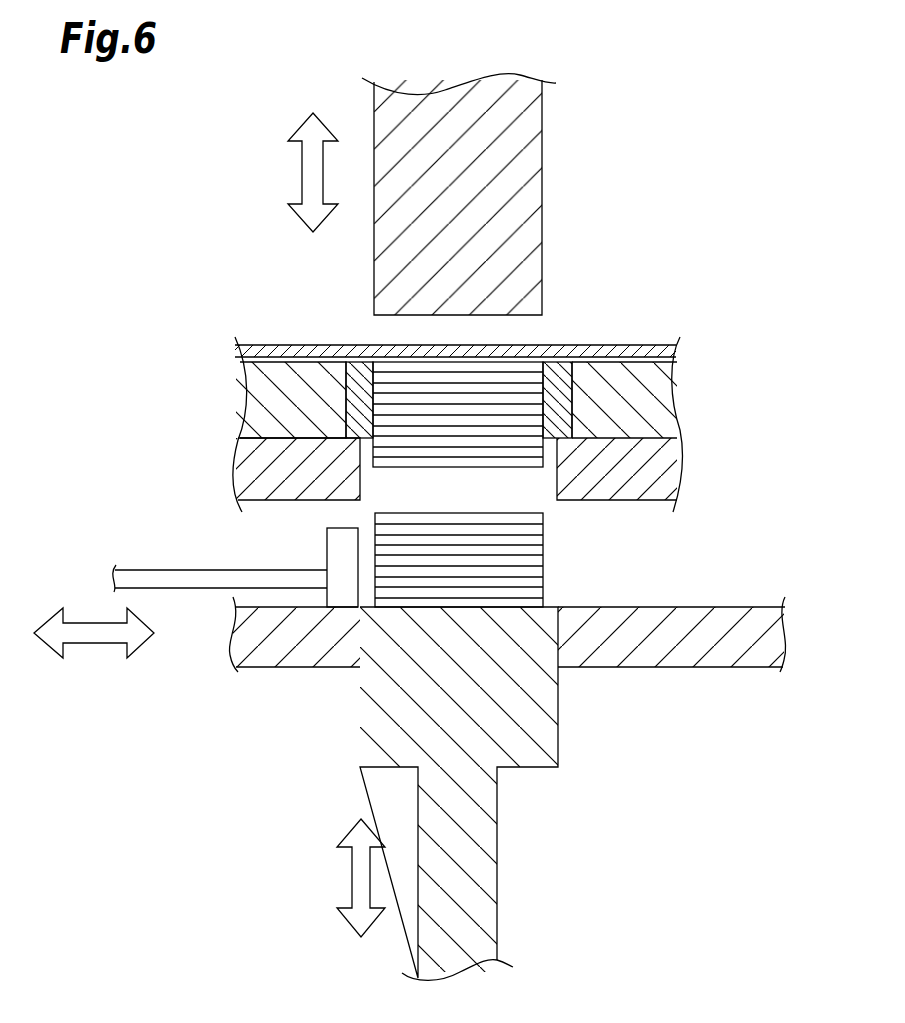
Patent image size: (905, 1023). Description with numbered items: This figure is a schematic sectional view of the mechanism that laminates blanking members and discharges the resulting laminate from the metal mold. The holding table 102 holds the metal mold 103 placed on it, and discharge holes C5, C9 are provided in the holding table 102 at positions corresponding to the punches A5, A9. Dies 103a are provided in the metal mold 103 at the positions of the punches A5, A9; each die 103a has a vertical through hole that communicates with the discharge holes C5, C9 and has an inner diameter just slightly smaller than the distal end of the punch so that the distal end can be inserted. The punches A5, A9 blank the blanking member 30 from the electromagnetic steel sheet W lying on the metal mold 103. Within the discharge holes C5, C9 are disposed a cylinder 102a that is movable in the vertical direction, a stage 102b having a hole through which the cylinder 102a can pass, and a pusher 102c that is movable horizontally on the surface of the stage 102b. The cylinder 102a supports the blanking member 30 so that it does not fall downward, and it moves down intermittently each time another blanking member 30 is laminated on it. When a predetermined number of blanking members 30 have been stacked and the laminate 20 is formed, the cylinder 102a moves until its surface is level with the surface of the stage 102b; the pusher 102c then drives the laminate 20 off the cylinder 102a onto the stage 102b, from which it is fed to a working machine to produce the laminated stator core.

The punch A5 is at (509, 194).
The punch A9 is at (534, 184).
The electromagnetic steel sheet W is at (318, 338).
The metal mold 103 is at (643, 378).
The die 103a is at (555, 368).
The blanking member 30 is at (546, 517).
The discharge hole C5 is at (265, 443).
The discharge hole C9 is at (383, 489).
The laminate 20 is at (556, 556).
The holding table 102 is at (466, 740).
The cylinder 102a is at (551, 720).
The stage 102b is at (688, 610).
The pusher 102c is at (185, 578).